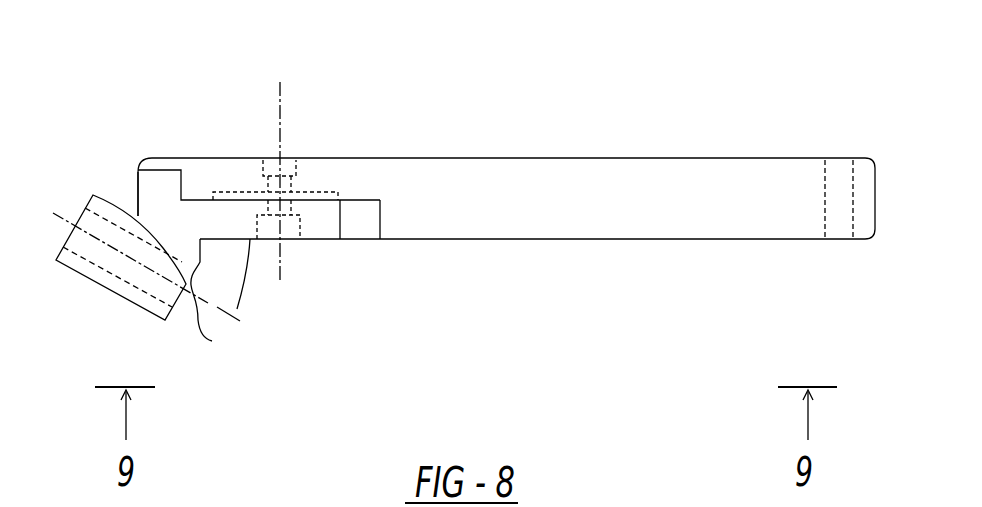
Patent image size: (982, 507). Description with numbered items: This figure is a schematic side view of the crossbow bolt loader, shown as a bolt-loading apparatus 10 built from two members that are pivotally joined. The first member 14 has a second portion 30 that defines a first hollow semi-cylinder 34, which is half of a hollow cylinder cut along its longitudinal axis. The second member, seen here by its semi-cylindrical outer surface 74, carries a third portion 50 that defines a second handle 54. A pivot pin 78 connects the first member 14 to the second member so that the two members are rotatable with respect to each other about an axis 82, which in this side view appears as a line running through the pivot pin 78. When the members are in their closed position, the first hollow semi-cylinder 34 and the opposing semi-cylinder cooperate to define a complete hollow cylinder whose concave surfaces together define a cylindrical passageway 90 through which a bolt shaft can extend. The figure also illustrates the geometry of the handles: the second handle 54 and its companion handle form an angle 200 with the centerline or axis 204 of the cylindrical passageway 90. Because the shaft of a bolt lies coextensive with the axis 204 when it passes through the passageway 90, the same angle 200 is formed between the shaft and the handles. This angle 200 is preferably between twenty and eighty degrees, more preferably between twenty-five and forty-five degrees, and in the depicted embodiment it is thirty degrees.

The bolt-loading apparatus 10 is at (518, 112).
The first member 14 is at (123, 302).
The second portion 30 is at (144, 307).
The first hollow semi-cylinder 34 is at (137, 305).
The third portion 50 is at (506, 232).
The second handle 54 is at (660, 210).
The semi-cylindrical outer surface 74 is at (63, 263).
The pivot pin 78 is at (287, 183).
The axis 82 is at (277, 105).
The cylindrical passageway 90 is at (77, 212).
The angle 200 is at (247, 280).
The axis of the cylindrical passageway 204 is at (212, 340).